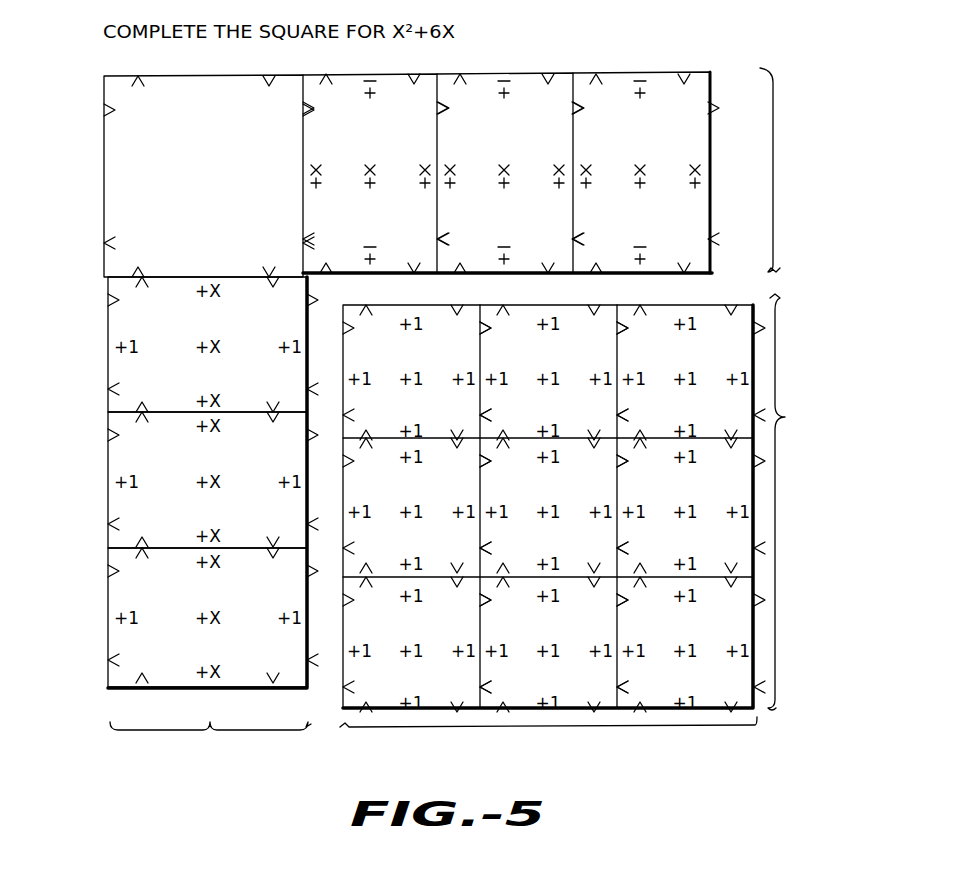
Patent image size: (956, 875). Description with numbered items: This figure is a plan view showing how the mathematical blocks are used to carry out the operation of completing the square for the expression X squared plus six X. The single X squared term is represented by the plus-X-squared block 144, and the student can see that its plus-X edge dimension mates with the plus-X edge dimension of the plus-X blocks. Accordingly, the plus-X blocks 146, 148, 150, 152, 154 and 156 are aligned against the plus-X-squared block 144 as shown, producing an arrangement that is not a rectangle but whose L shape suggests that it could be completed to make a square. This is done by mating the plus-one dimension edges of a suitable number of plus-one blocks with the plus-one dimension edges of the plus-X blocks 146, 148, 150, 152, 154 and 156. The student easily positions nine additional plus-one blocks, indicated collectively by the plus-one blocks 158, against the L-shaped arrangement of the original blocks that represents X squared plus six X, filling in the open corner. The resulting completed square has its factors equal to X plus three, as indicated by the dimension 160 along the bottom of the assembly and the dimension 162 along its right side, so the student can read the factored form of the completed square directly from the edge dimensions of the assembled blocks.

The +X² block 144 is at (104, 186).
The +X block 146 is at (108, 347).
The +X block 148 is at (108, 498).
The +X block 150 is at (108, 647).
The +X block 152 is at (372, 75).
The +X block 154 is at (493, 74).
The +X block 156 is at (641, 73).
The +1 blocks 158 is at (606, 713).
The dimension X+3 160 is at (210, 743).
The dimension X+3 162 is at (584, 397).